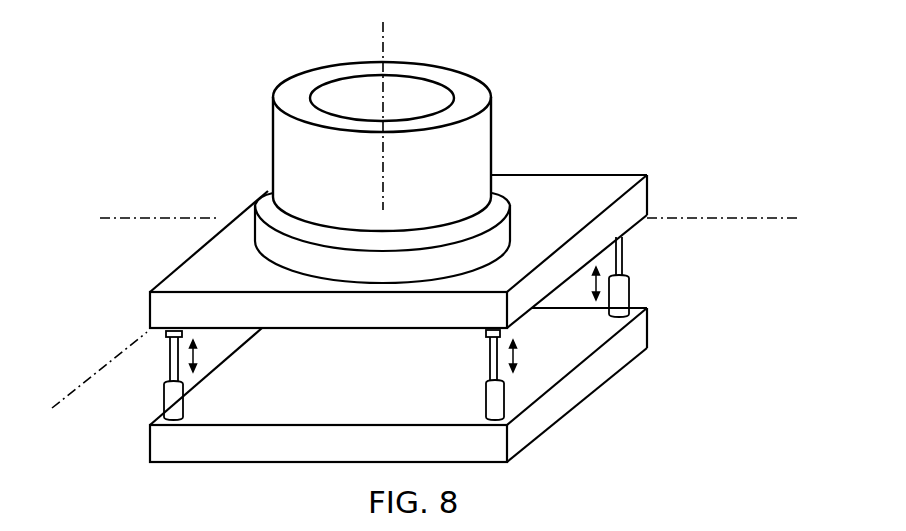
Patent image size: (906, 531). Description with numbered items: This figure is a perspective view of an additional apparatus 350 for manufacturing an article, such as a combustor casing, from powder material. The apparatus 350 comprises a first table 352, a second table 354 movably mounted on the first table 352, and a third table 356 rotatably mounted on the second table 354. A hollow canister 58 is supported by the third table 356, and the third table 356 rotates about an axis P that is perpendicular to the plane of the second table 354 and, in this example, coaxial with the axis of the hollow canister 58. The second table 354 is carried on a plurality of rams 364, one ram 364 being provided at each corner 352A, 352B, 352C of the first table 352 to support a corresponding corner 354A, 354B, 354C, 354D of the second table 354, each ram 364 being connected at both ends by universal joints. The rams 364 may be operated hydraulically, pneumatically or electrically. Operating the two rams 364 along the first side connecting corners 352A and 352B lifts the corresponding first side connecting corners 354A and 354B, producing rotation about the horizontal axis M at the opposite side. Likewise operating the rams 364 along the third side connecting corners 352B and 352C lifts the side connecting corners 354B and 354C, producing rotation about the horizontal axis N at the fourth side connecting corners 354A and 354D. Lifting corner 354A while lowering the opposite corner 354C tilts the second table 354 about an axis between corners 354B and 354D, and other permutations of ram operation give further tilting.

The hollow canister 58 is at (483, 127).
The apparatus 350 is at (598, 128).
The first table 352 is at (587, 372).
The corner of the first table 352A is at (147, 447).
The corner of the first table 352B is at (507, 463).
The corner of the first table 352C is at (630, 339).
The second table 354 is at (568, 195).
The corner of the second table 354A is at (147, 310).
The corner of the second table 354B is at (493, 311).
The corner of the second table 354C is at (638, 189).
The corner of the second table 354D is at (270, 191).
The third table 356 is at (512, 234).
The ram 364 is at (168, 397).
The axis P is at (386, 38).
The horizontal axis M is at (125, 218).
The horizontal axis N is at (64, 392).